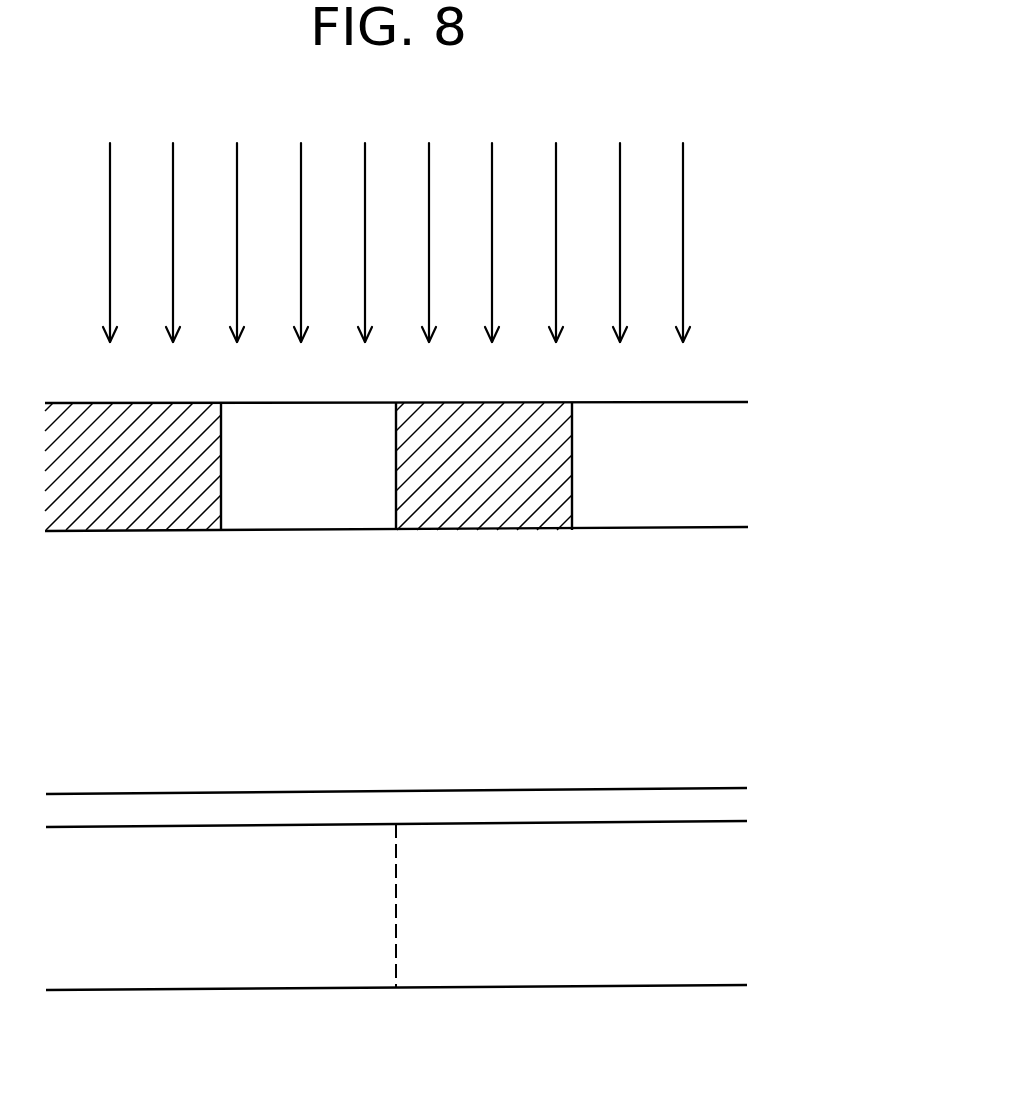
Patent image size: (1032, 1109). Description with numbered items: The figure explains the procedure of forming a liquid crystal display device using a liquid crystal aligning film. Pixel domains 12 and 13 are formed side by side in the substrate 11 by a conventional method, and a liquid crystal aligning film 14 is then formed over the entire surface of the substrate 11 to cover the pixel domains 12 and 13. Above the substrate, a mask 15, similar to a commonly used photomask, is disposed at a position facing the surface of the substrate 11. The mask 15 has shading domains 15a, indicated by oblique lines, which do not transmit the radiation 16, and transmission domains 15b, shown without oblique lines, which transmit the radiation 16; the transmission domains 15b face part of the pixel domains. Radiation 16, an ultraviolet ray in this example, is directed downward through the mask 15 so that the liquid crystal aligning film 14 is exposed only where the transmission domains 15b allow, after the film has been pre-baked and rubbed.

The substrate 11 is at (722, 900).
The pixel domain 12 is at (221, 957).
The pixel domain 13 is at (571, 956).
The liquid crystal aligning film 14 is at (725, 807).
The mask 15 is at (483, 508).
The shading domain 15a is at (137, 532).
The transmission domain 15b is at (308, 515).
The radiation 16 is at (700, 244).